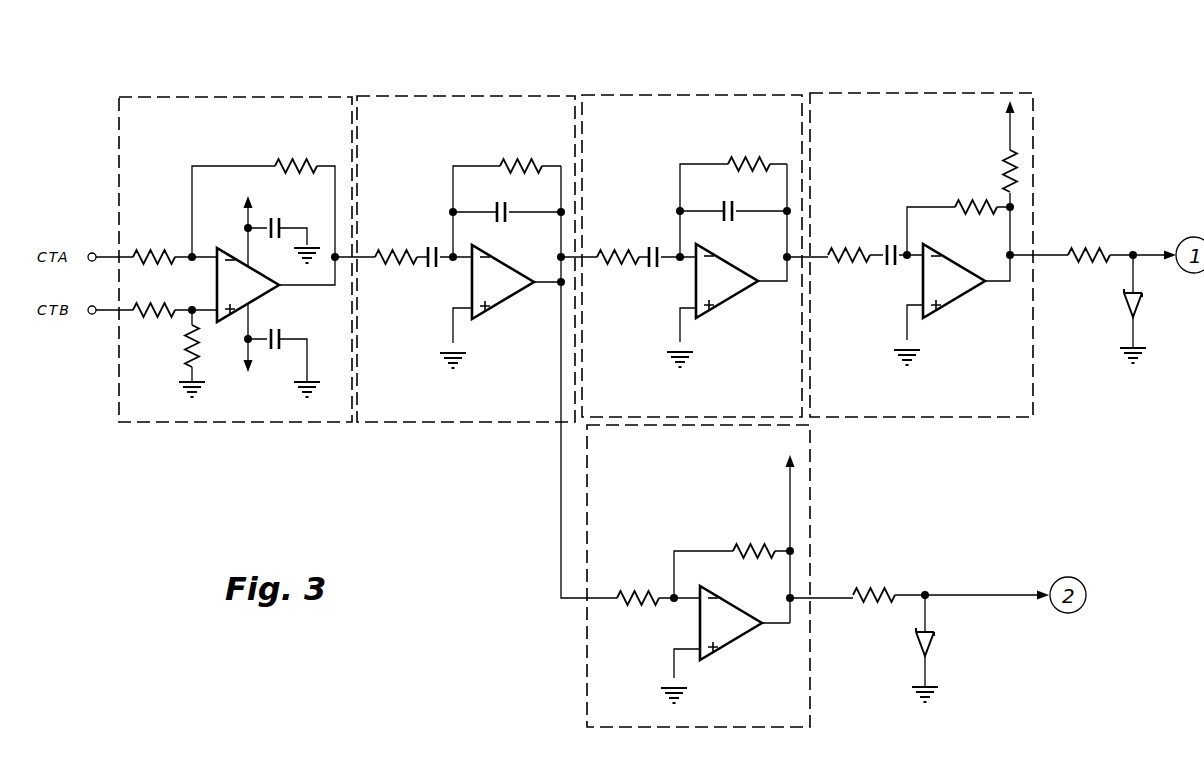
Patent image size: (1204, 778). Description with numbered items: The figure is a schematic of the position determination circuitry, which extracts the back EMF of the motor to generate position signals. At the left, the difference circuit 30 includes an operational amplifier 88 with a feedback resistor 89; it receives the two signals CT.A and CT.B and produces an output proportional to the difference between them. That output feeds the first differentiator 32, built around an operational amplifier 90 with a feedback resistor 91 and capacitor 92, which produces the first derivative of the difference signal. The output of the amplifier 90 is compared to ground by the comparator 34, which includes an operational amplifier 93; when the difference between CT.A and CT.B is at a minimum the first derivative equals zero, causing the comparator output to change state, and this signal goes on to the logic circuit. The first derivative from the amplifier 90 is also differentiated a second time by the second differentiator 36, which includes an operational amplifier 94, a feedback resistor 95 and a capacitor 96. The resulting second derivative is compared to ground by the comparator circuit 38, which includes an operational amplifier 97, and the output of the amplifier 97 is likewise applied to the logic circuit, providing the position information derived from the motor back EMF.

The difference circuit 30 is at (262, 423).
The first differentiator 32 is at (437, 423).
The comparator 34 is at (587, 675).
The second differentiator 36 is at (705, 95).
The comparator circuit 38 is at (950, 93).
The operational amplifier 88 is at (217, 283).
The feedback resistor 89 is at (288, 159).
The operational amplifier 90 is at (507, 301).
The feedback resistor 91 is at (506, 159).
The capacitor 92 is at (505, 219).
The operational amplifier 93 is at (736, 632).
The operational amplifier 94 is at (723, 300).
The feedback resistor 95 is at (747, 158).
The capacitor 96 is at (733, 216).
The operational amplifier 97 is at (963, 291).